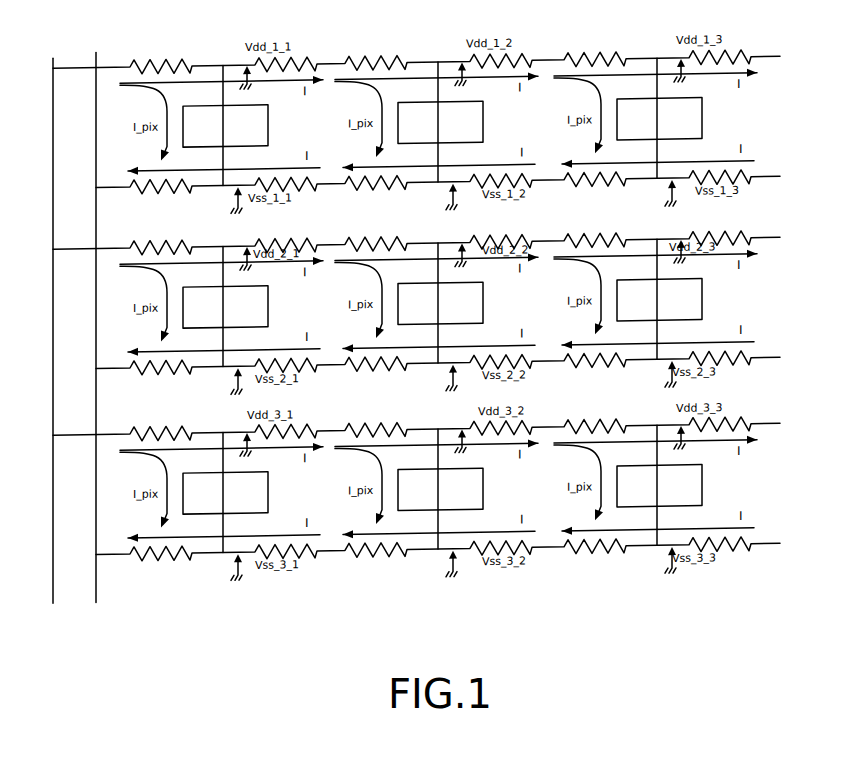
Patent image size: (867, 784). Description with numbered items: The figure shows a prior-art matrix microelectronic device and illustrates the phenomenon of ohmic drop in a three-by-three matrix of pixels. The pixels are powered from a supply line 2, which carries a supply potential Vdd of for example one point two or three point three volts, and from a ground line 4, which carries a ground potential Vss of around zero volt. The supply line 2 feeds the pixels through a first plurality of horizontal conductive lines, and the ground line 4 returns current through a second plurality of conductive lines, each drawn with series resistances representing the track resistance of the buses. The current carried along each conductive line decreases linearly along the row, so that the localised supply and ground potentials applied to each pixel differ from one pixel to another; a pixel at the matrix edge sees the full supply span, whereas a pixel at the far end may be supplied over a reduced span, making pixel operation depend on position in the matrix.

The supply line 2 is at (53, 556).
The ground line 4 is at (97, 573).